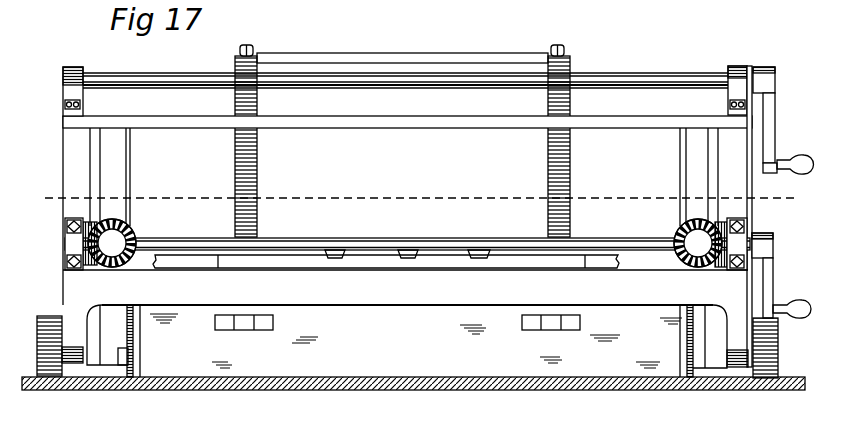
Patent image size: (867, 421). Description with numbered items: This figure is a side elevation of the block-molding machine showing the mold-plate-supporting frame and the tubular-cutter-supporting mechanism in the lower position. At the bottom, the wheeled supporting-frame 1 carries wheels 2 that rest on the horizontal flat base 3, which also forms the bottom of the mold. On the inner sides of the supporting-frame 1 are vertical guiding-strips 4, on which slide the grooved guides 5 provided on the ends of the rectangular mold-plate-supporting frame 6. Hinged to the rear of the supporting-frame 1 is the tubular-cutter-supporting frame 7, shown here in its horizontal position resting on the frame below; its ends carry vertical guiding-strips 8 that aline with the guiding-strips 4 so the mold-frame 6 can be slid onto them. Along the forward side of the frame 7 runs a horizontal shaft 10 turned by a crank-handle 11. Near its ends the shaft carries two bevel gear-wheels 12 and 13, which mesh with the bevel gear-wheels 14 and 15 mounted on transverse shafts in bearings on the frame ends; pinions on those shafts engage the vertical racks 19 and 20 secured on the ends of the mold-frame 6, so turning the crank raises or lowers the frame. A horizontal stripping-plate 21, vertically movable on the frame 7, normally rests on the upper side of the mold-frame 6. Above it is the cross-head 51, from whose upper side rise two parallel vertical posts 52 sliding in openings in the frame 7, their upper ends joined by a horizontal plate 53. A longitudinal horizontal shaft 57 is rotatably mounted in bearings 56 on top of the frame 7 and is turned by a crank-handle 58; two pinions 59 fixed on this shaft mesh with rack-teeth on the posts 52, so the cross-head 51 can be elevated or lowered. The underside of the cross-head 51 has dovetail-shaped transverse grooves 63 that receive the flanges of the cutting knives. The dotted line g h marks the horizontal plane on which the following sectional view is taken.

The supporting-frame 1 is at (407, 291).
The wheels 2 is at (38, 353).
The base 3 is at (472, 388).
The vertical guiding-strips 4 is at (407, 336).
The grooved guides 5 is at (406, 341).
The mold-plate-supporting frame 6 is at (411, 341).
The tubular-cutter-supporting frame 7 is at (625, 128).
The vertical guiding-strips 8 is at (407, 171).
The horizontal shaft 10 is at (512, 250).
The crank-handle 11 is at (772, 290).
The bevel gear-wheel 12 is at (751, 240).
The bevel gear-wheel 13 is at (65, 266).
The bevel gear-wheel 14 is at (682, 227).
The bevel gear-wheel 15 is at (134, 233).
The vertical rack 19 is at (686, 347).
The vertical rack 20 is at (134, 341).
The stripping-plate 21 is at (240, 265).
The cross-head 51 is at (288, 253).
The vertical posts 52 is at (257, 155).
The horizontal plate 53 is at (392, 53).
The bearings 56 is at (72, 90).
The longitudinal horizontal shaft 57 is at (609, 76).
The crank-handle 58 is at (775, 131).
The pinions 59 is at (256, 86).
The transverse groove 63 is at (336, 254).
The dotted line g h g is at (411, 202).
The dotted line g h is at (794, 200).